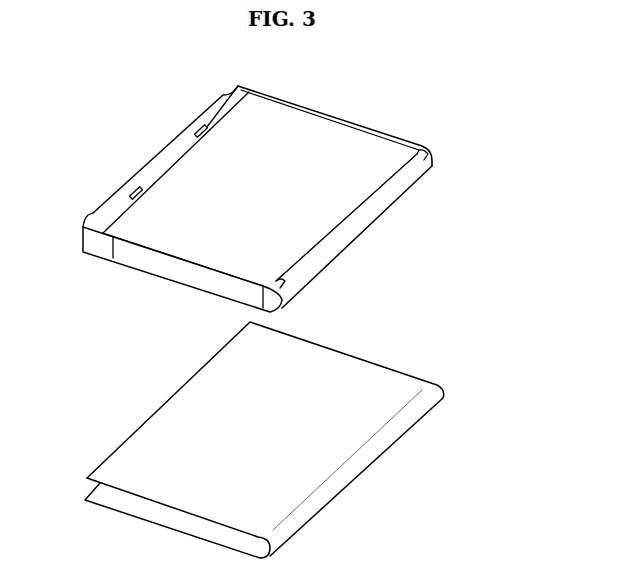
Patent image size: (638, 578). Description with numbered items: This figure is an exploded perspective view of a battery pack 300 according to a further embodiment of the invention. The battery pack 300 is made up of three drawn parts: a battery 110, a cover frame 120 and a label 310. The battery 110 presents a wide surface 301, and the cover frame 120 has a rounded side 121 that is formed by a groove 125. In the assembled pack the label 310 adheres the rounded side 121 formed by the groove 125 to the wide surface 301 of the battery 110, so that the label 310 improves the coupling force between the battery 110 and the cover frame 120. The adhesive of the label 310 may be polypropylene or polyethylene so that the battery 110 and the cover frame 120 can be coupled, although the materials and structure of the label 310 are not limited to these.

The battery pack 300 is at (284, 196).
The battery 110 is at (331, 129).
The wide surface 301 is at (338, 170).
The cover frame 120 is at (369, 256).
The rounded side 121 is at (387, 197).
The groove 125 is at (426, 148).
The label 310 is at (375, 488).